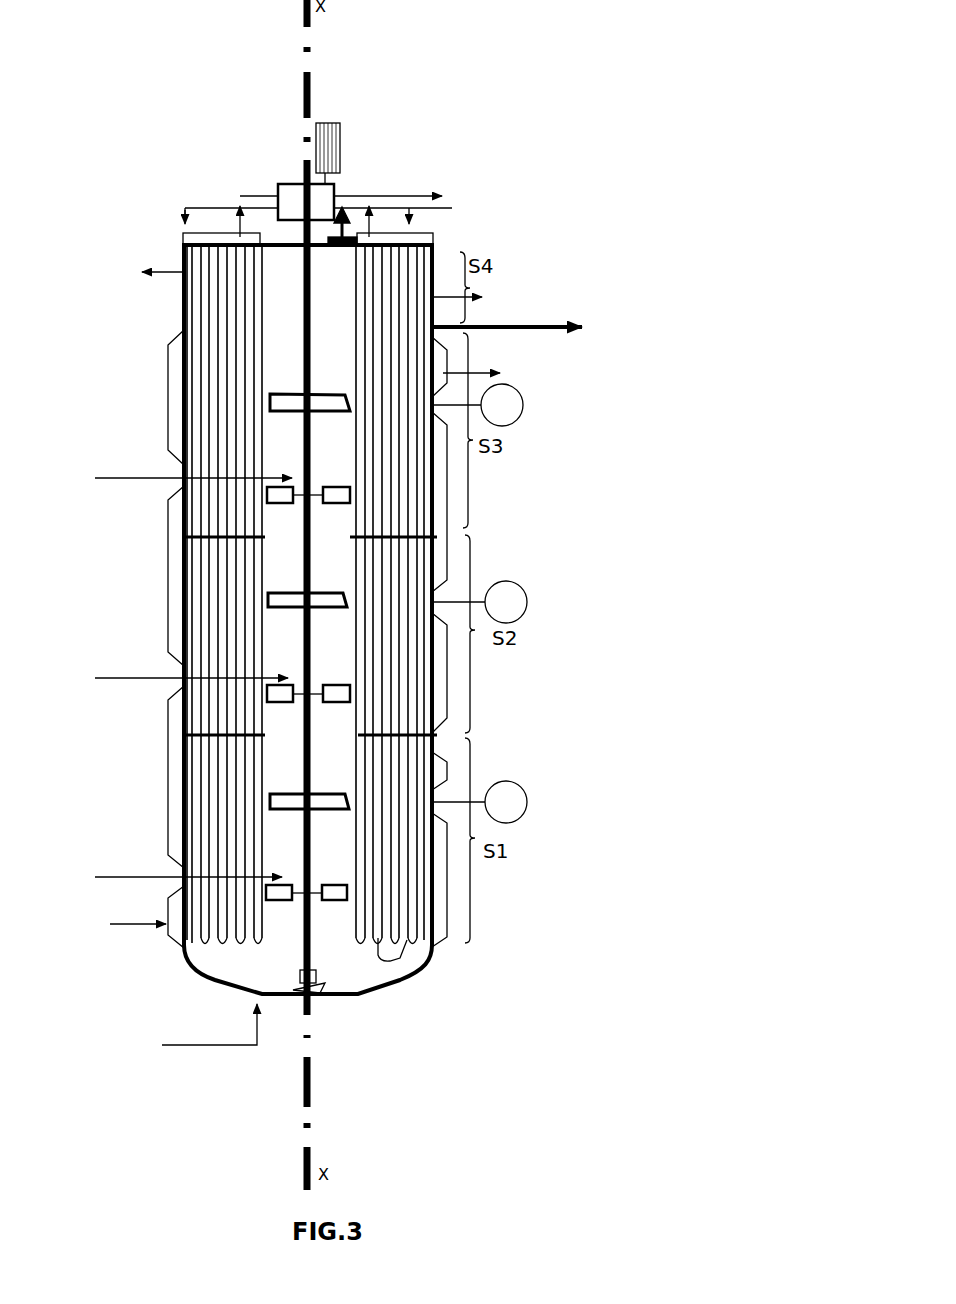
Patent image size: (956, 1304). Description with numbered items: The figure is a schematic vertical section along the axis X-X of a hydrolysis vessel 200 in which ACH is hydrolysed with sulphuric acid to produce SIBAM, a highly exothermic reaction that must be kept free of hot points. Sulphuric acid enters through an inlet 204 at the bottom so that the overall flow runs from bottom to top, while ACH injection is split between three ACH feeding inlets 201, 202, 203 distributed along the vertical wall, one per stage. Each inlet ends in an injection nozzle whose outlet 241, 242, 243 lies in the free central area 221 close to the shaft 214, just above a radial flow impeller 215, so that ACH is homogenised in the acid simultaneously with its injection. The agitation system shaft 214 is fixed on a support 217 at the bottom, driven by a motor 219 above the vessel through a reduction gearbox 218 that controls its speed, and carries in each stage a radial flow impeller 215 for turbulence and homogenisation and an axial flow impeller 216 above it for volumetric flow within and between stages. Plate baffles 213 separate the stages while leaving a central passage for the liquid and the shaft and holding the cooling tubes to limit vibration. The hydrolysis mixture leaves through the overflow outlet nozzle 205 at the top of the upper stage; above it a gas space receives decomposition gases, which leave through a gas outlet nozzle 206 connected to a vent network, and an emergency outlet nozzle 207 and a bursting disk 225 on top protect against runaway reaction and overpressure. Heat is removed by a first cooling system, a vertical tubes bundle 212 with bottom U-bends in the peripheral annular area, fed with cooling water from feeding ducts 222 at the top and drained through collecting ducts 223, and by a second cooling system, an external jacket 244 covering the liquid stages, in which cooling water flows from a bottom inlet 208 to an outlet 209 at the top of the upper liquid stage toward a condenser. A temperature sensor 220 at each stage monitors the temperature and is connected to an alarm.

The hydrolysis vessel 200 is at (578, 122).
The ACH feeding inlet 201 is at (165, 877).
The ACH feeding inlet 202 is at (162, 678).
The ACH feeding inlet 203 is at (175, 478).
The sulfuric acid inlet 204 is at (173, 1031).
The overflow outlet nozzle 205 is at (507, 314).
The gas outlet nozzle 206 is at (478, 298).
The emergency outlet nozzle 207 is at (158, 259).
The bottom inlet 208 is at (137, 912).
The outlet 209 is at (477, 360).
The tubes bundle 212 is at (405, 957).
The plate baffle 213 is at (417, 737).
The shaft 214 is at (303, 318).
The radial flow impeller 215 is at (286, 504).
The axial flow impeller 216 is at (288, 395).
The support 217 is at (318, 996).
The reduction gearbox 218 is at (290, 188).
The motor 219 is at (318, 125).
The temperature sensor 220 is at (523, 403).
The free central area 221 is at (334, 924).
The feeding duct 222 is at (183, 209).
The collecting duct 223 is at (240, 200).
The bursting disk 225 is at (343, 205).
The injection nozzle outlet 241 is at (306, 878).
The injection nozzle outlet 242 is at (306, 678).
The injection nozzle outlet 243 is at (306, 480).
The external jacket 244 is at (168, 806).